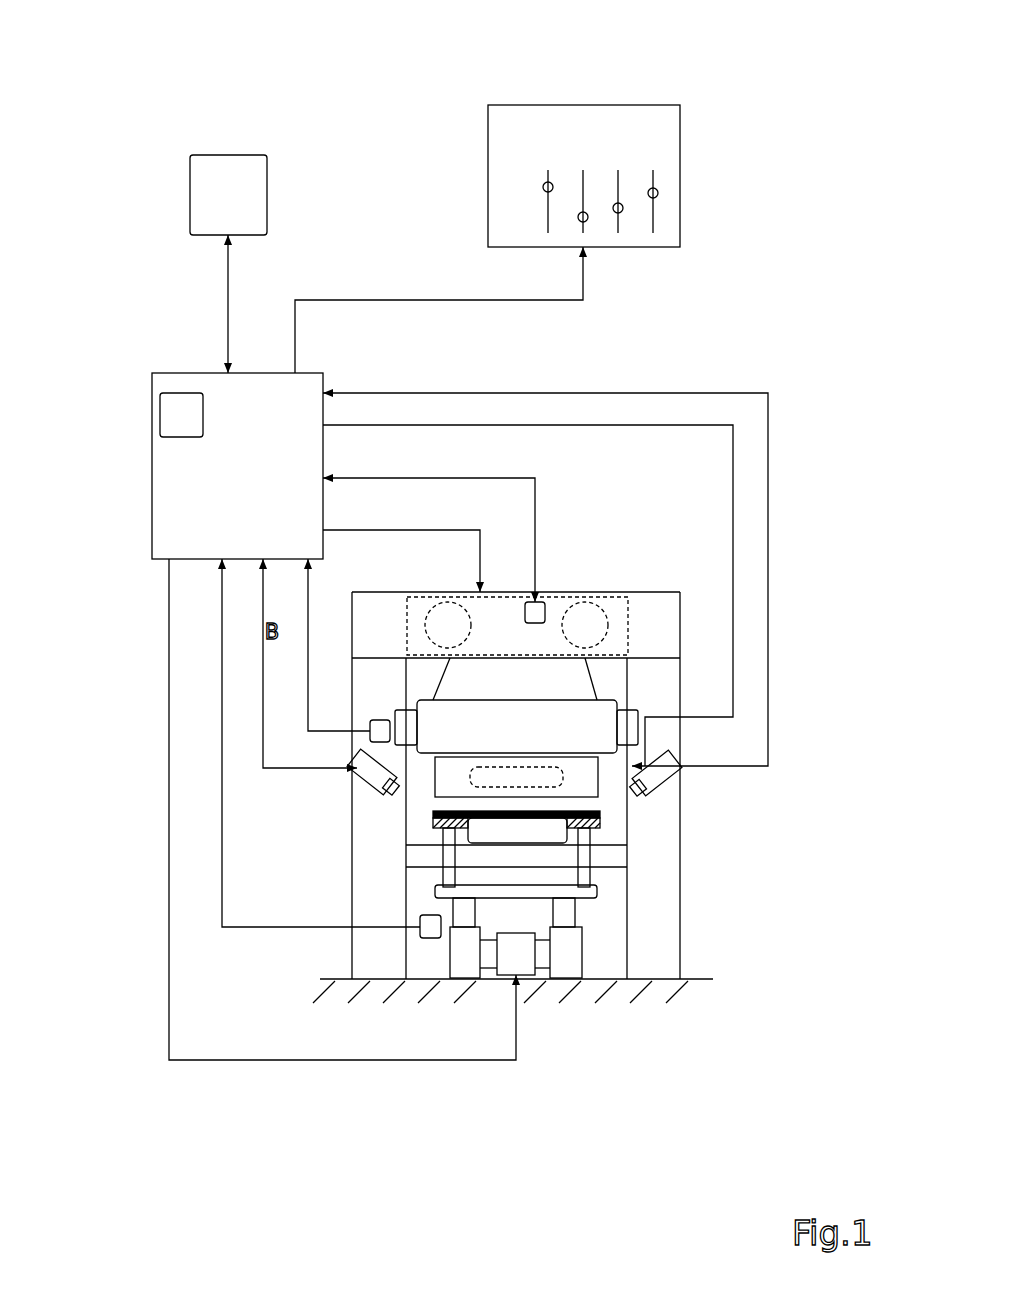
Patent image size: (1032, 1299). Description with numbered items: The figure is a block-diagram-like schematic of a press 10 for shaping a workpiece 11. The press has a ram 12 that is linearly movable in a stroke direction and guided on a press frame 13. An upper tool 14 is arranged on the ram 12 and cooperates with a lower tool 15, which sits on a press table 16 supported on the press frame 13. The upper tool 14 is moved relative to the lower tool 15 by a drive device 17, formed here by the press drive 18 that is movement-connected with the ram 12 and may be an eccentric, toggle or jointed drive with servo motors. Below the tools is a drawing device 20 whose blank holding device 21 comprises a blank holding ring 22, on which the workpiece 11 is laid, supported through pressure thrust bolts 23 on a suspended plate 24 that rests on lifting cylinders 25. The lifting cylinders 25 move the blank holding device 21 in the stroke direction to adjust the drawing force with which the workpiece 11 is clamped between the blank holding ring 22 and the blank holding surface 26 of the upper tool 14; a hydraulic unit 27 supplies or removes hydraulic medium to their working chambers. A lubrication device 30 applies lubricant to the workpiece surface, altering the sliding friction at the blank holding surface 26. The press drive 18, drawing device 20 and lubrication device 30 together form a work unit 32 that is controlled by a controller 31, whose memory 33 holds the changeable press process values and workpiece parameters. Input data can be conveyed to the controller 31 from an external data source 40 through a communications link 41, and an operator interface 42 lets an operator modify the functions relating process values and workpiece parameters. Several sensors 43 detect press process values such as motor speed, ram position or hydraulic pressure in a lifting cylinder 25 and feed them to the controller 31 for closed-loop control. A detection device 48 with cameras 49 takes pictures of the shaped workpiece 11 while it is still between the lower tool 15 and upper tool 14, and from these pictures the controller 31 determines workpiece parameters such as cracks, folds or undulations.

The press 10 is at (786, 81).
The workpiece 11 is at (437, 810).
The ram 12 is at (430, 703).
The press frame 13 is at (662, 947).
The upper tool 14 is at (473, 771).
The lower tool 15 is at (437, 843).
The press table 16 is at (620, 855).
The drive device 17 is at (588, 598).
The press drive 18 is at (624, 598).
The drawing device 20 is at (607, 918).
The blank holding device 21 is at (425, 880).
The blank holding ring 22 is at (600, 818).
The pressure thrust bolts 23 is at (586, 872).
The suspended plate 24 is at (597, 890).
The lifting cylinders 25 is at (462, 972).
The blank holding surface 26 is at (433, 800).
The hydraulic unit 27 is at (525, 968).
The lubrication device 30 is at (592, 816).
The controller 31 is at (160, 496).
The work unit 32 is at (714, 678).
The memory 33 is at (175, 412).
The external data source 40 is at (198, 175).
The communications link 41 is at (226, 307).
The operator interface 42 is at (535, 105).
The sensors 43 is at (545, 598).
The detection device 48 is at (733, 746).
The cameras 49 is at (362, 775).